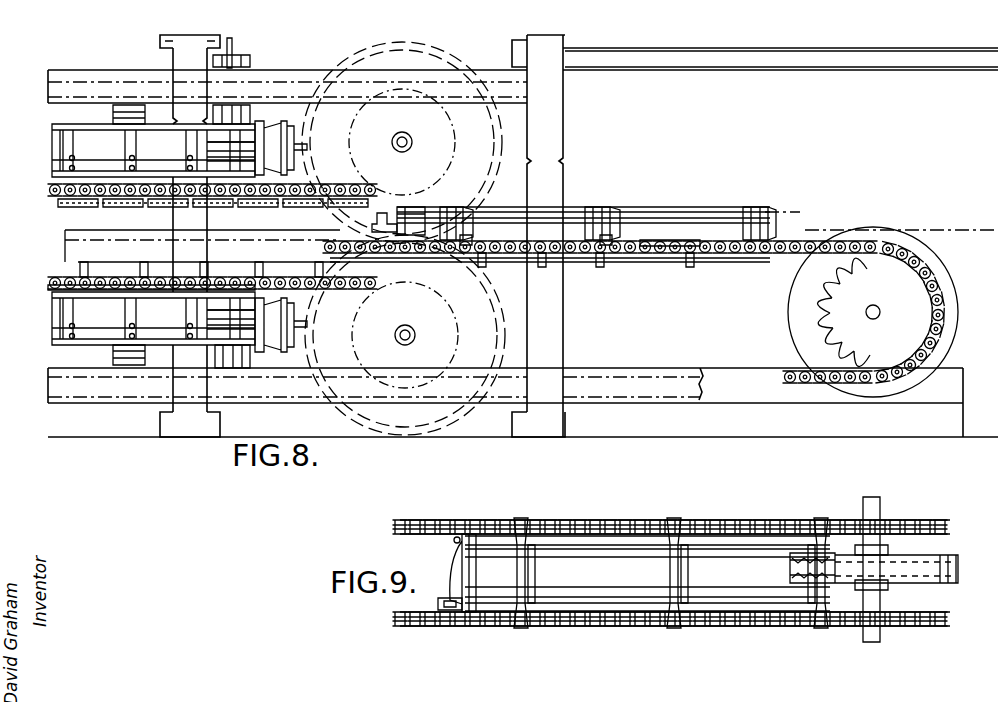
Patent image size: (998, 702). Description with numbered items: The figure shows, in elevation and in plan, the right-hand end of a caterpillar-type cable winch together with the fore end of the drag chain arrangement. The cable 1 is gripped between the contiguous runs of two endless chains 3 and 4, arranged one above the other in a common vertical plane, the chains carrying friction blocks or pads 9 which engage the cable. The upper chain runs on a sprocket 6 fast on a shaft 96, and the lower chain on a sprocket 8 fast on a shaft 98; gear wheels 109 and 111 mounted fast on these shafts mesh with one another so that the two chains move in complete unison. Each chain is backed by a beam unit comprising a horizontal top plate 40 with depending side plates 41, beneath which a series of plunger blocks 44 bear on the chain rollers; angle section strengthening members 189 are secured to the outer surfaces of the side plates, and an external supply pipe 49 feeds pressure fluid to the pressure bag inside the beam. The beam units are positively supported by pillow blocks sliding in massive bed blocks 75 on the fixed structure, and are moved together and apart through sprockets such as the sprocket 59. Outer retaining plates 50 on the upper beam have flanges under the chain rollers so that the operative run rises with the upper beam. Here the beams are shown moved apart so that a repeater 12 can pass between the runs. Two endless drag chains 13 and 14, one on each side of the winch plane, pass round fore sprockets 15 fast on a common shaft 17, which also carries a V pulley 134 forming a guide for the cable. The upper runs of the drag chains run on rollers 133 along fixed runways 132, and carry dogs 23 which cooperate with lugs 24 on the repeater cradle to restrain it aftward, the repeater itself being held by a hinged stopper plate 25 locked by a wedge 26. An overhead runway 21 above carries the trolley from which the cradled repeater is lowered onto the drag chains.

In FIG. 8, the cable 1 is at (905, 228).
In FIG. 8, the endless chain 3 is at (307, 80).
In FIG. 8, the endless chain 4 is at (252, 393).
In FIG. 8, the sprocket 6 is at (434, 137).
In FIG. 8, the sprocket 8 is at (382, 363).
In FIG. 8, the blocks or pads 9 is at (88, 198).
In FIG. 8, the repeater 12 is at (783, 212).
In FIG. 8, the endless drag chain 13 is at (677, 253).
In FIG. 9, the endless drag chain 13 is at (742, 626).
In FIG. 9, the endless drag chain 14 is at (733, 520).
In FIG. 8, the fore sprocket 15 is at (812, 322).
In FIG. 8, the common shaft 17 is at (880, 312).
In FIG. 9, the common shaft 17 is at (880, 510).
In FIG. 8, the overhead runway 21 is at (852, 62).
In FIG. 8, the dogs 23 is at (590, 212).
In FIG. 9, the dogs 23 is at (512, 525).
In FIG. 8, the lugs 24 is at (612, 212).
In FIG. 9, the lugs 24 is at (524, 525).
In FIG. 8, the hinged stopper plate 25 is at (400, 212).
In FIG. 9, the hinged stopper plate 25 is at (458, 550).
In FIG. 8, the wedge 26 is at (378, 212).
In FIG. 9, the wedge 26 is at (447, 600).
In FIG. 8, the top plate 40 is at (107, 124).
In FIG. 8, the side plates 41 is at (97, 168).
In FIG. 8, the plunger blocks 44 is at (243, 190).
In FIG. 8, the external supply pipe 49 is at (300, 140).
In FIG. 8, the outer retaining plates 50 is at (62, 198).
In FIG. 8, the sprocket 59 is at (232, 45).
In FIG. 8, the bed blocks 75 is at (128, 108).
In FIG. 8, the shaft 96 is at (402, 132).
In FIG. 8, the shaft 98 is at (405, 326).
In FIG. 8, the gear wheel 109 is at (460, 55).
In FIG. 8, the gear wheel 111 is at (352, 418).
In FIG. 8, the fixed runways 132 is at (605, 262).
In FIG. 8, the rollers 133 is at (483, 258).
In FIG. 9, the rollers 133 is at (462, 520).
In FIG. 8, the V pulley 134 is at (878, 240).
In FIG. 9, the V pulley 134 is at (945, 560).
In FIG. 8, the angle section strengthening members 189 is at (72, 145).